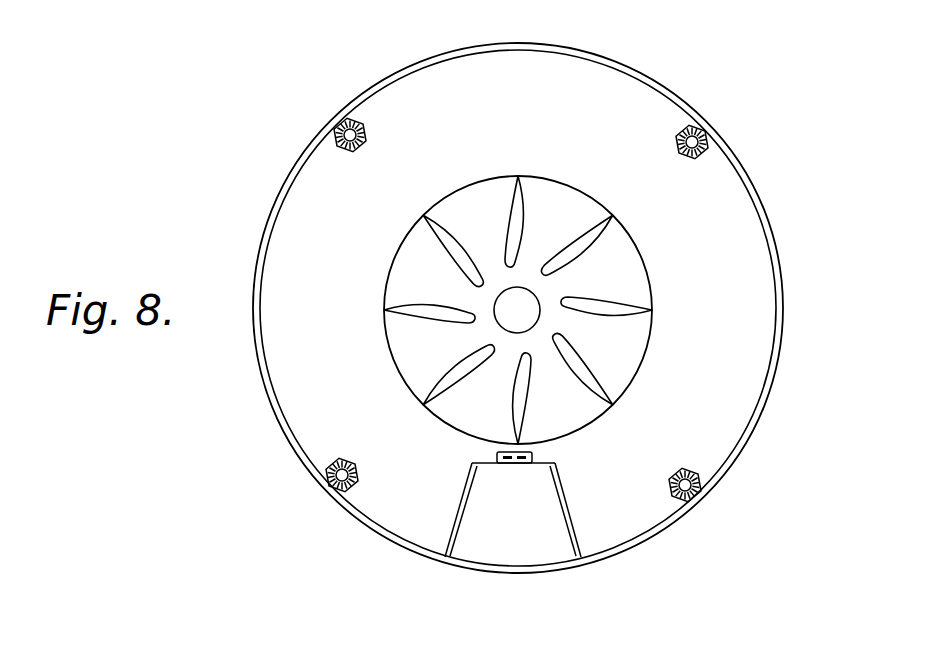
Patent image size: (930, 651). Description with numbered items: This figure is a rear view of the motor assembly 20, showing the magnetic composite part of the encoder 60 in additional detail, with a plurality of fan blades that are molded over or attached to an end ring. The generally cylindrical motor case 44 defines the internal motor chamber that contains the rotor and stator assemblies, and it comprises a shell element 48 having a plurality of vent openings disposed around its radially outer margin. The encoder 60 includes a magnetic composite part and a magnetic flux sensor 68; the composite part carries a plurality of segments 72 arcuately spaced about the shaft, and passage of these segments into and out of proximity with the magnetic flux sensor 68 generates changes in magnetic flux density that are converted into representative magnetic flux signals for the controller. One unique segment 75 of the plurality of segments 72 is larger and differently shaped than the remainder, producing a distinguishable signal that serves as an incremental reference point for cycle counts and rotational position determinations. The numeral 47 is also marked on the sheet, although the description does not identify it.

The motor assembly 20 is at (775, 178).
The motor case 44 is at (630, 60).
The shell element 48 is at (285, 188).
The plurality of segments 72 is at (515, 187).
The unique segment 75 is at (513, 418).
The encoder 60 is at (560, 453).
The magnetic flux sensor 68 is at (516, 480).
The base 47 is at (236, 641).